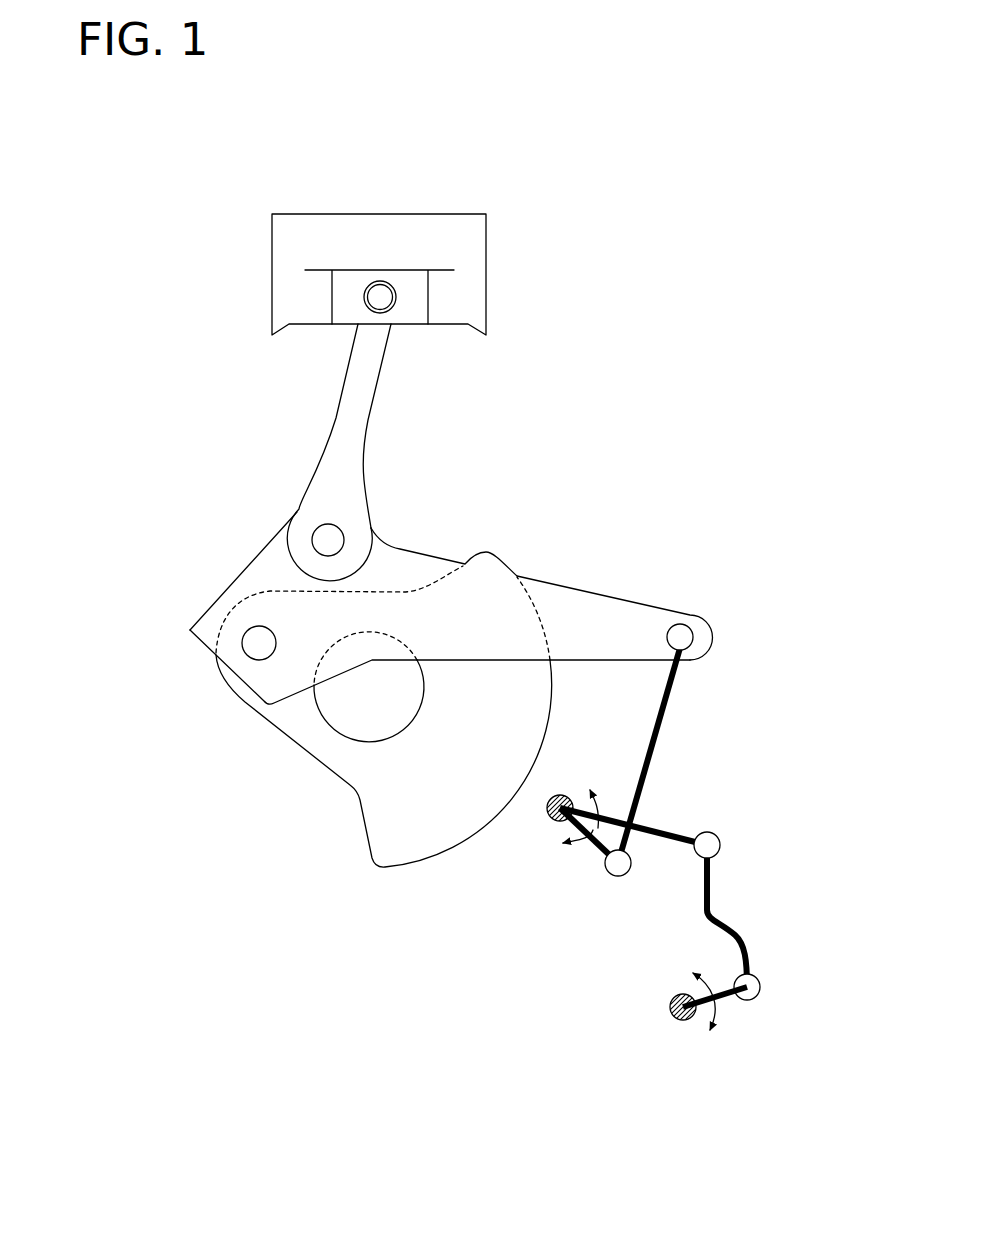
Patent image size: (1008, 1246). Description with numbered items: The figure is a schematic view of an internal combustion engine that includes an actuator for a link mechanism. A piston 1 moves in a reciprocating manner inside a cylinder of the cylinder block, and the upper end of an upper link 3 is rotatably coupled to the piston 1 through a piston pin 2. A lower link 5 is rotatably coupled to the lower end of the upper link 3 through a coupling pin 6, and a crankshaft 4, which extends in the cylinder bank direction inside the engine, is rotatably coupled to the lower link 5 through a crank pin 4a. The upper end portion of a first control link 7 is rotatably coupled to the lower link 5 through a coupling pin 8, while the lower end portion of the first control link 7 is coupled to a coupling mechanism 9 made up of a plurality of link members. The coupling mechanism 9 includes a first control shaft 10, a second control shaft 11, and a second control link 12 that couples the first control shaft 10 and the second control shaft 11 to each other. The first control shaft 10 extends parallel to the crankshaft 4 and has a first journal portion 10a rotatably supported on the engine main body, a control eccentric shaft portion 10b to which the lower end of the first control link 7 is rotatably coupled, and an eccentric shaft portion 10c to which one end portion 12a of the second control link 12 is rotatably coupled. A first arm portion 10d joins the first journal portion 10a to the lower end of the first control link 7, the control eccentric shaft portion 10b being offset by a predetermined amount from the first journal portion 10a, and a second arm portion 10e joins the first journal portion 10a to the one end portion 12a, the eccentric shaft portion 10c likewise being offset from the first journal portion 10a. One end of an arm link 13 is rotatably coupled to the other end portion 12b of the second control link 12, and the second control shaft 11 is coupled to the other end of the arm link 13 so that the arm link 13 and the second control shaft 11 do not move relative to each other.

The piston 1 is at (487, 252).
The piston pin 2 is at (380, 292).
The upper link 3 is at (372, 375).
The crankshaft 4 is at (295, 745).
The crank pin 4a is at (255, 637).
The lower link 5 is at (402, 550).
The coupling pin 6 is at (325, 538).
The first control link 7 is at (663, 707).
The coupling pin 8 is at (680, 637).
The coupling mechanism 9 is at (681, 899).
The first control shaft 10 is at (638, 842).
The first journal portion 10a is at (565, 795).
The control eccentric shaft portion 10b is at (607, 870).
The eccentric shaft portion 10c is at (720, 840).
The first arm portion 10d is at (593, 843).
The second arm portion 10e is at (660, 830).
The second control shaft 11 is at (680, 1017).
The second control link 12 is at (775, 929).
The one end portion 12a is at (711, 865).
The other end portion 12b is at (752, 962).
The arm link 13 is at (723, 997).